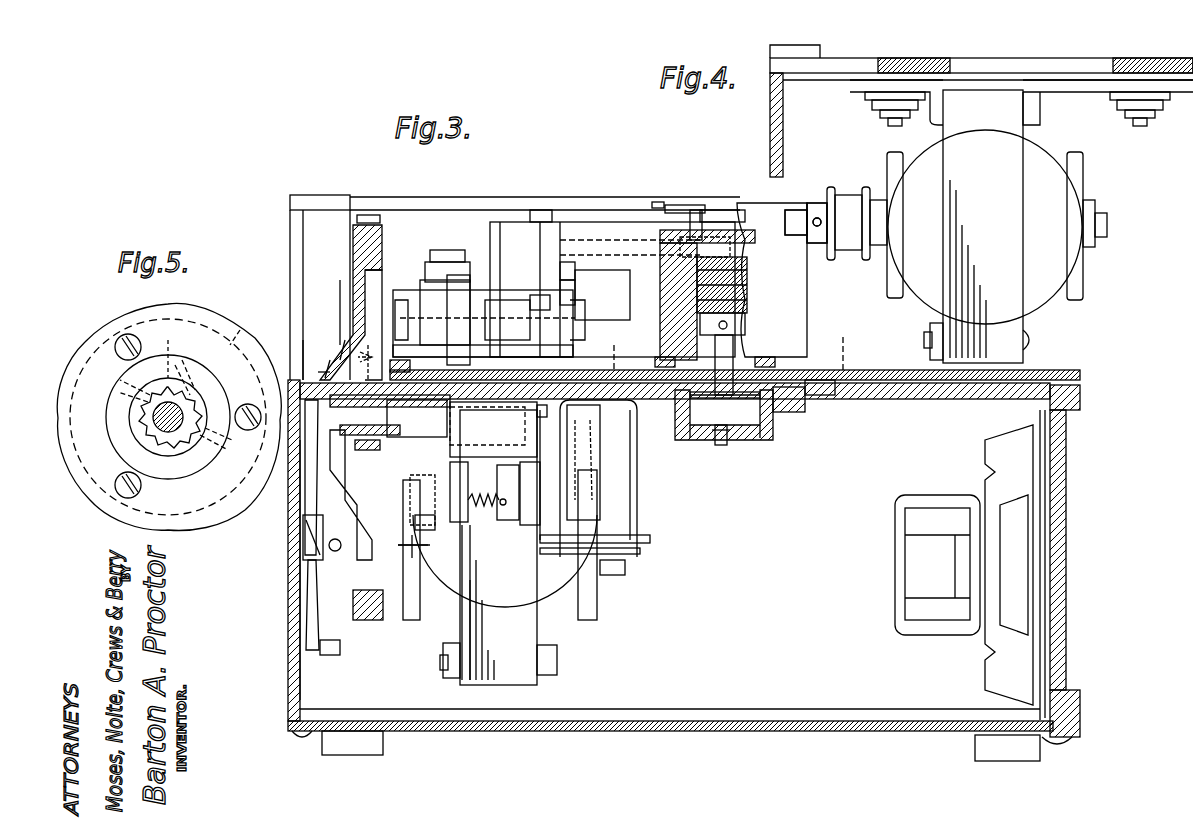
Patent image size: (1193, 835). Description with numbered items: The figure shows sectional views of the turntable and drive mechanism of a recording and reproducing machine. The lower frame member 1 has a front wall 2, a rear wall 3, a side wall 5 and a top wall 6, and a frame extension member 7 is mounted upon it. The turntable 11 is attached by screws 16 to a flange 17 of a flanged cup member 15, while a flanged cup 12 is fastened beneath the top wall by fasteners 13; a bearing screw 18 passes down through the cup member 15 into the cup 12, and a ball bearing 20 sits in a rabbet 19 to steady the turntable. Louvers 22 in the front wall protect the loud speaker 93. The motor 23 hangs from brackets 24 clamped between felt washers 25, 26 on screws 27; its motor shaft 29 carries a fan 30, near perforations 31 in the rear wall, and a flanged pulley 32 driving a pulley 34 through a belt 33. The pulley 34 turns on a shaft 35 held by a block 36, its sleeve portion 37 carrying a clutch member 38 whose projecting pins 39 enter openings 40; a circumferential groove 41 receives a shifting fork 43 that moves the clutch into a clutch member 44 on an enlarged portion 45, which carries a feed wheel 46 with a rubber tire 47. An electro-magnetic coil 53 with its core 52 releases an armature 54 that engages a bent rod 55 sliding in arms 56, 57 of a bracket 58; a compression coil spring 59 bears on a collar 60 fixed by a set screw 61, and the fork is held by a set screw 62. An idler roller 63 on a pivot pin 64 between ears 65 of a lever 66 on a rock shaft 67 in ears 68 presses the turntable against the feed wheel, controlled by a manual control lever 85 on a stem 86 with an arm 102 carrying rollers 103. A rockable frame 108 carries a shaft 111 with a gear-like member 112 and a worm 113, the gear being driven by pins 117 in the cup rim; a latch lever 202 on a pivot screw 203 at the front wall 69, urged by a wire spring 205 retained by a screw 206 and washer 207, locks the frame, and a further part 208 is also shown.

In FIG. 3, the lower frame member 1 is at (257, 731).
In FIG. 3, the front wall 2 is at (1070, 698).
In FIG. 3, the rear wall 3 is at (288, 672).
In FIG. 3, the side wall 5 is at (727, 346).
In FIG. 3, the top wall 6 is at (910, 400).
In FIG. 4, the top wall 6 is at (1110, 54).
In FIG. 3, the frame extension member 7 is at (394, 450).
In FIG. 5, the turntable 11 is at (222, 318).
In FIG. 3, the flanged cup 12 is at (695, 442).
In FIG. 3, the fasteners 13 is at (672, 410).
In FIG. 3, the flanged cup member 15 is at (758, 445).
In FIG. 5, the flanged cup member 15 is at (178, 478).
In FIG. 3, the screws 16 is at (790, 372).
In FIG. 5, the screws 16 is at (122, 336).
In FIG. 3, the flange 17 is at (828, 398).
In FIG. 5, the flange 17 is at (242, 332).
In FIG. 3, the bearing screw 18 is at (722, 447).
In FIG. 3, the rabbet 19 is at (800, 414).
In FIG. 3, the ball bearing 20 is at (748, 372).
In FIG. 3, the louvers 22 is at (1062, 580).
In FIG. 3, the motor 23 is at (435, 648).
In FIG. 4, the motor 23 is at (1060, 318).
In FIG. 4, the brackets 24 is at (862, 96).
In FIG. 4, the felt washer 25 is at (918, 62).
In FIG. 4, the felt washer 26 is at (876, 104).
In FIG. 4, the screws 27 is at (893, 126).
In FIG. 3, the motor shaft 29 is at (795, 208).
In FIG. 4, the motor shaft 29 is at (1107, 222).
In FIG. 3, the fan 30 is at (330, 652).
In FIG. 3, the perforations 31 is at (290, 510).
In FIG. 3, the flanged pulley 32 is at (335, 565).
In FIG. 4, the flanged pulley 32 is at (858, 262).
In FIG. 3, the belt 33 is at (378, 222).
In FIG. 3, the pulley 34 is at (358, 618).
In FIG. 3, the shaft 35 is at (300, 360).
In FIG. 3, the block 36 is at (493, 429).
In FIG. 3, the sleeve portion 37 is at (348, 482).
In FIG. 3, the clutch member 38 is at (345, 340).
In FIG. 3, the projecting pins 39 is at (330, 360).
In FIG. 3, the openings 40 is at (320, 372).
In FIG. 3, the circumferential groove 41 is at (340, 300).
In FIG. 3, the shifting fork 43 is at (427, 500).
In FIG. 3, the clutch member 44 is at (392, 437).
In FIG. 3, the enlarged portion 45 is at (487, 425).
In FIG. 3, the feed wheel 46 is at (390, 416).
In FIG. 3, the rubber tire 47 is at (420, 360).
In FIG. 3, the core 52 is at (570, 556).
In FIG. 3, the electro-magnetic coil 53 is at (600, 465).
In FIG. 3, the armature 54 is at (638, 512).
In FIG. 3, the bent rod 55 is at (560, 560).
In FIG. 3, the arm 56 is at (528, 526).
In FIG. 3, the arm 57 is at (428, 524).
In FIG. 3, the bracket 58 is at (537, 411).
In FIG. 3, the compression coil spring 59 is at (472, 525).
In FIG. 3, the collar 60 is at (497, 495).
In FIG. 3, the set screw 61 is at (512, 500).
In FIG. 3, the set screw 62 is at (430, 546).
In FIG. 3, the idler roller 63 is at (560, 352).
In FIG. 3, the pivot pin 64 is at (538, 312).
In FIG. 3, the ears 65 is at (505, 298).
In FIG. 3, the lever 66 is at (417, 270).
In FIG. 3, the rock shaft 67 is at (400, 298).
In FIG. 3, the ears 68 is at (512, 272).
In FIG. 3, the front wall 69 is at (585, 290).
In FIG. 3, the manual control lever 85 is at (582, 232).
In FIG. 3, the stem 86 is at (540, 208).
In FIG. 3, the loud speaker 93 is at (996, 676).
In FIG. 3, the arm 102 is at (572, 292).
In FIG. 3, the rollers 103 is at (570, 268).
In FIG. 3, the rockable frame 108 is at (662, 300).
In FIG. 3, the shaft 111 is at (746, 326).
In FIG. 5, the shaft 111 is at (130, 412).
In FIG. 3, the gear-like member 112 is at (762, 440).
In FIG. 5, the gear-like member 112 is at (168, 388).
In FIG. 3, the worm 113 is at (748, 300).
In FIG. 3, the pins 117 is at (660, 362).
In FIG. 5, the pins 117 is at (200, 380).
In FIG. 3, the latch lever 202 is at (728, 205).
In FIG. 3, the pivot screw 203 is at (700, 242).
In FIG. 3, the wire spring 205 is at (722, 208).
In FIG. 3, the screw 206 is at (657, 200).
In FIG. 3, the washer 207 is at (680, 204).
In FIG. 3, the pin 208 is at (698, 208).